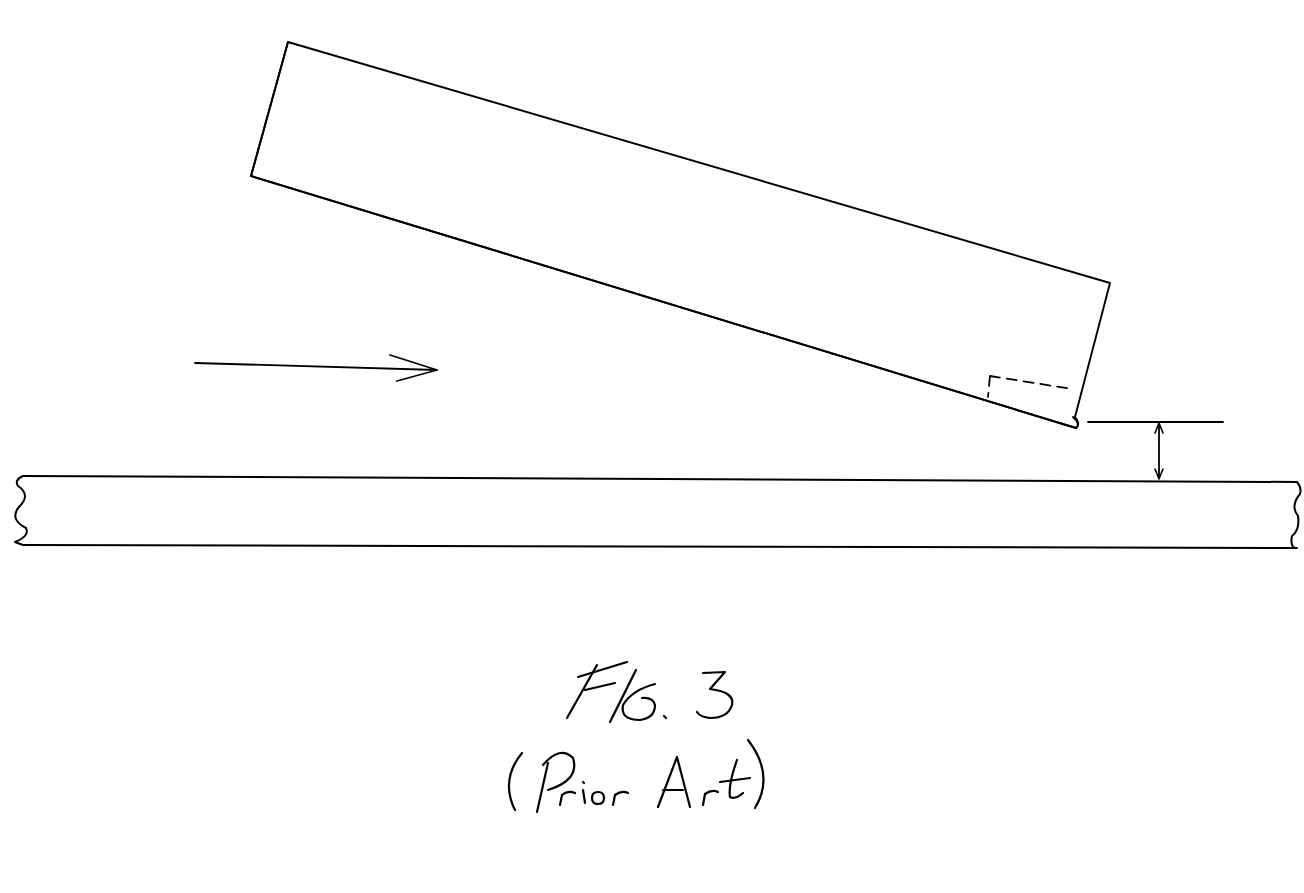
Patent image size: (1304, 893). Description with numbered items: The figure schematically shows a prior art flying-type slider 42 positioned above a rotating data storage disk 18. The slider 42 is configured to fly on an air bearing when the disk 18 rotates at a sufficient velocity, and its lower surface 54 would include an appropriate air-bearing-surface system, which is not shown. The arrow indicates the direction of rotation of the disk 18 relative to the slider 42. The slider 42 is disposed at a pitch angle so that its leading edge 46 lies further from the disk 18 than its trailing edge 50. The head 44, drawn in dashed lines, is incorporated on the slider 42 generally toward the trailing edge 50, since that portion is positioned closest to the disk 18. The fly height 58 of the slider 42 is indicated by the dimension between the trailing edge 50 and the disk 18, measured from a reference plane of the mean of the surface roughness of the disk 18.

The slider 42 is at (715, 250).
The head 44 is at (1026, 395).
The leading edge 46 is at (250, 174).
The trailing edge 50 is at (1077, 428).
The lower surface 54 is at (377, 215).
The fly height 58 is at (1162, 451).
The data storage disk 18 is at (320, 477).